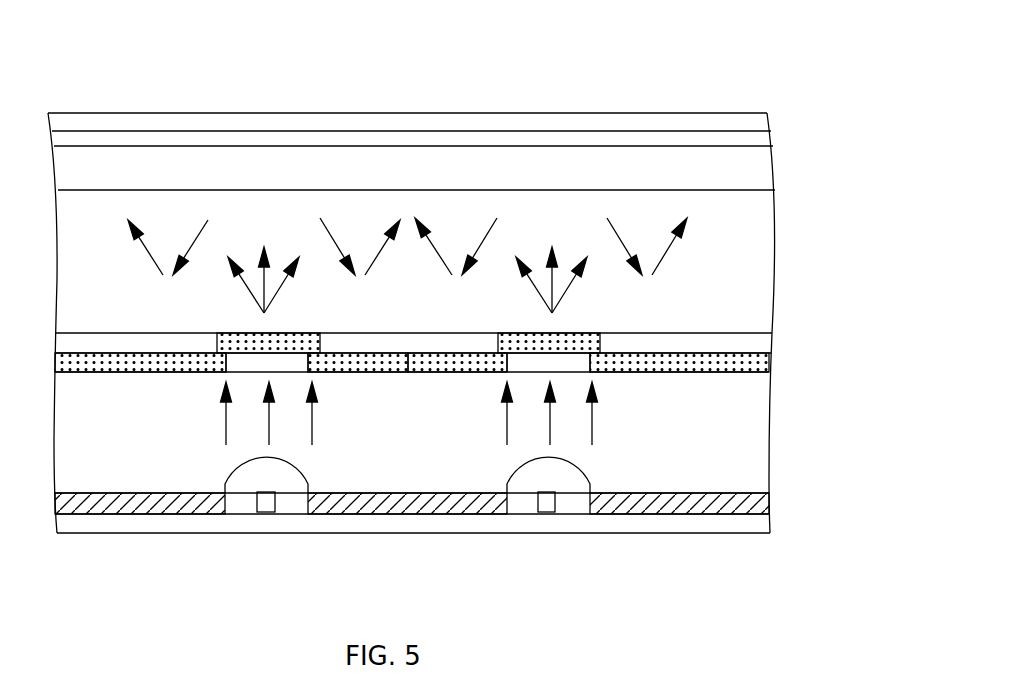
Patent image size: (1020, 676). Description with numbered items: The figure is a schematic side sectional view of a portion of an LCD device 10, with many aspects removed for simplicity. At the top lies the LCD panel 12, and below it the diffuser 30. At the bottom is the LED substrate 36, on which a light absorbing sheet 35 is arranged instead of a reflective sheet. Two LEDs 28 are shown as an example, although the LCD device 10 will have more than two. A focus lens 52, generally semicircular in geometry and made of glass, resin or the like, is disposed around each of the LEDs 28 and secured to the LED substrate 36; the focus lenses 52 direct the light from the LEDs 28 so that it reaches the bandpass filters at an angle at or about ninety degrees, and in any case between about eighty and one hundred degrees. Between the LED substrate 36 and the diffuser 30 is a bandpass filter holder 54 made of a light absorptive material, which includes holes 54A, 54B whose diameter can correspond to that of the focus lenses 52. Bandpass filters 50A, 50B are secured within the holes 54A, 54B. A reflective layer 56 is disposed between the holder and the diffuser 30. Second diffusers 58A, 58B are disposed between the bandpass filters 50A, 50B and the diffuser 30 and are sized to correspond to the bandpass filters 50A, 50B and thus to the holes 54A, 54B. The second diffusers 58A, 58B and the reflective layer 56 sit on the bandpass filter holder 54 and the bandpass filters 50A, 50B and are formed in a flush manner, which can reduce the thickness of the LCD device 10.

The LCD device 10 is at (757, 45).
The LCD panel 12 is at (748, 118).
The LEDs 28 is at (258, 508).
The diffuser 30 is at (748, 173).
The light absorbing sheet 35 is at (147, 493).
The LED substrate 36 is at (757, 525).
The bandpass filter 50A is at (252, 373).
The bandpass filter 50B is at (565, 373).
The focus lens 52 is at (222, 498).
The bandpass filter holder 54 is at (108, 362).
The hole 54A is at (326, 392).
The hole 54B is at (489, 392).
The reflective layer 56 is at (108, 342).
The second diffuser 58A is at (253, 333).
The second diffuser 58B is at (562, 333).